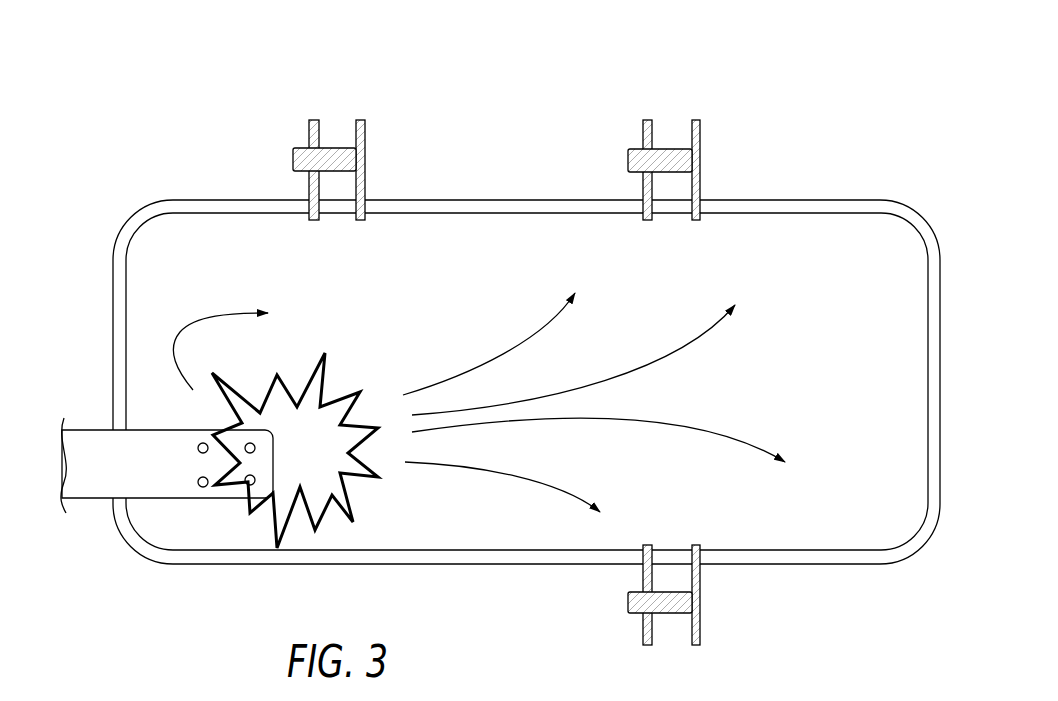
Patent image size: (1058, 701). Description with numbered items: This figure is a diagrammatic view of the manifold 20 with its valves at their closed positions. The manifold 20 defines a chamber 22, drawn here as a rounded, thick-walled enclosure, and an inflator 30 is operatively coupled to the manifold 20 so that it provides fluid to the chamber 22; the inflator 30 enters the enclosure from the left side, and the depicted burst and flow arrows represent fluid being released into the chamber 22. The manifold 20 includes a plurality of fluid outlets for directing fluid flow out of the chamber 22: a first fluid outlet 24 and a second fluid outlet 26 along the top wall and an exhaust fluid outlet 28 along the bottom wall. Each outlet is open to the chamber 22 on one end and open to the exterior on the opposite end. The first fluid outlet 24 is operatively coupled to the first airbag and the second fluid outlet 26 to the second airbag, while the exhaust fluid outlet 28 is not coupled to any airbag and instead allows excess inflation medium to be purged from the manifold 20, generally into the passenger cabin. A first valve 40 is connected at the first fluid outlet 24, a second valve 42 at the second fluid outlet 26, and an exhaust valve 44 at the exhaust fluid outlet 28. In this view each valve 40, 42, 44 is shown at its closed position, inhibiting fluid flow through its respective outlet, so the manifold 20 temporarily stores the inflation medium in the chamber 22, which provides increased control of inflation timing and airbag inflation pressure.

The manifold 20 is at (178, 110).
The chamber 22 is at (847, 388).
The first fluid outlet 24 is at (700, 200).
The second fluid outlet 26 is at (366, 200).
The exhaust fluid outlet 28 is at (703, 566).
The inflator 30 is at (95, 502).
The first valve 40 is at (628, 160).
The second valve 42 is at (293, 158).
The exhaust valve 44 is at (628, 603).